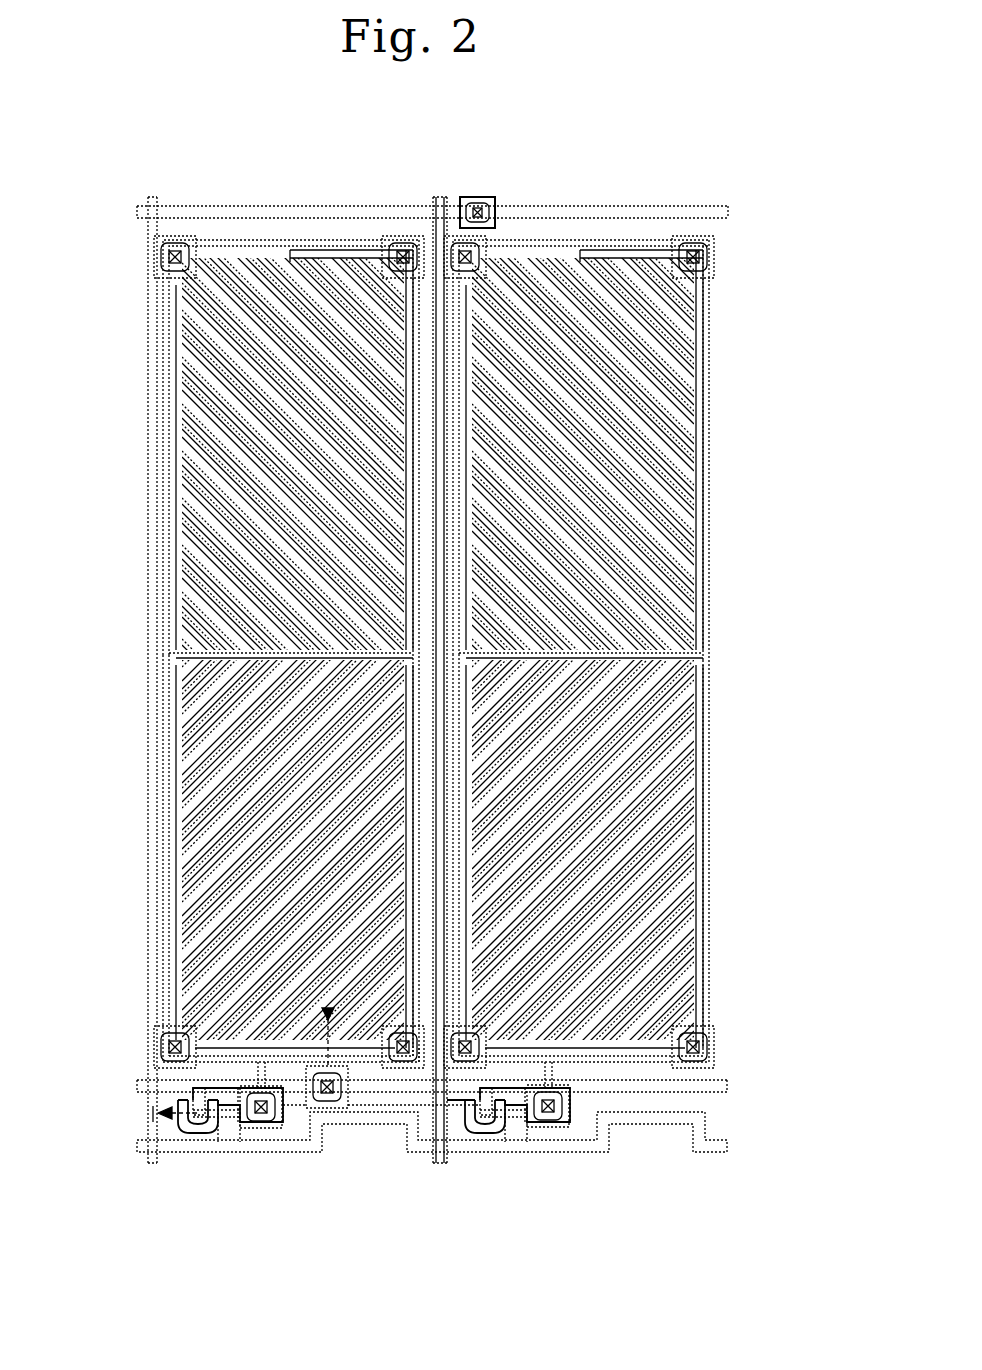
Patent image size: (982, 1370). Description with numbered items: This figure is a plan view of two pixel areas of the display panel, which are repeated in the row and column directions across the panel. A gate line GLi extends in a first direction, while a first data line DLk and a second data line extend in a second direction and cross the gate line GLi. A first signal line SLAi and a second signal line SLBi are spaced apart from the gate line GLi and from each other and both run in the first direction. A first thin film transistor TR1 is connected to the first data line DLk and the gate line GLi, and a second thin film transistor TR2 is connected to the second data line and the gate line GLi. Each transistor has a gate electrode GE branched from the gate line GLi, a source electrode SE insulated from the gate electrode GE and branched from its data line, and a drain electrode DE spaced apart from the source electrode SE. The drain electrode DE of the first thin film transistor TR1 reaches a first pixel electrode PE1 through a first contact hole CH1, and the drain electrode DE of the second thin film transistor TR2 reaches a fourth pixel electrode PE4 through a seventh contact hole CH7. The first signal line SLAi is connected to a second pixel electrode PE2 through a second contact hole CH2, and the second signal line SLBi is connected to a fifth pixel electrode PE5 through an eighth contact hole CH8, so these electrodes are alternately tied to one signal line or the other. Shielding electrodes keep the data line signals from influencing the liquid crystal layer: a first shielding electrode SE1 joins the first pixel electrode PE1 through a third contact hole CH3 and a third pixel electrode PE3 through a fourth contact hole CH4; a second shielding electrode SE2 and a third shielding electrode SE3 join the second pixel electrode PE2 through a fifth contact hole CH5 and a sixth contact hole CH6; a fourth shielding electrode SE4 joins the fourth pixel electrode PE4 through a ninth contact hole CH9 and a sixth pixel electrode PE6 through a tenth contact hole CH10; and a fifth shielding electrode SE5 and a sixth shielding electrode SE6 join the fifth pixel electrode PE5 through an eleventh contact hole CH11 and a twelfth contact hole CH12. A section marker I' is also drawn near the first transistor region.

The first data line DLk is at (152, 197).
The second signal line SLBi is at (728, 212).
The first signal line SLAi is at (727, 1086).
The gate line GLi is at (727, 1146).
The first shielding electrode SE1 is at (183, 640).
The second shielding electrode SE2 is at (370, 1062).
The third shielding electrode SE3 is at (165, 373).
The fourth shielding electrode SE4 is at (705, 655).
The fifth shielding electrode SE5 is at (705, 1025).
The sixth shielding electrode SE6 is at (545, 240).
The first pixel electrode PE1 is at (175, 1025).
The second pixel electrode PE2 is at (205, 460).
The third pixel electrode PE3 is at (402, 240).
The fourth pixel electrode PE4 is at (640, 680).
The fifth pixel electrode PE5 is at (707, 630).
The sixth pixel electrode PE6 is at (660, 497).
The first contact hole CH1 is at (280, 1152).
The second contact hole CH2 is at (327, 1110).
The third contact hole CH3 is at (154, 1047).
The fourth contact hole CH4 is at (403, 236).
The fifth contact hole CH5 is at (410, 1068).
The sixth contact hole CH6 is at (154, 258).
The seventh contact hole CH7 is at (574, 1151).
The eighth contact hole CH8 is at (485, 197).
The ninth contact hole CH9 is at (462, 1068).
The tenth contact hole CH10 is at (714, 259).
The eleventh contact hole CH11 is at (714, 1047).
The twelfth contact hole CH12 is at (465, 236).
The source electrode SE is at (185, 1135).
The gate electrode GE is at (208, 1135).
The drain electrode DE is at (220, 1130).
The first thin film transistor TR1 is at (371, 1171).
The second thin film transistor TR2 is at (546, 1170).
The section line I' is at (247, 1053).